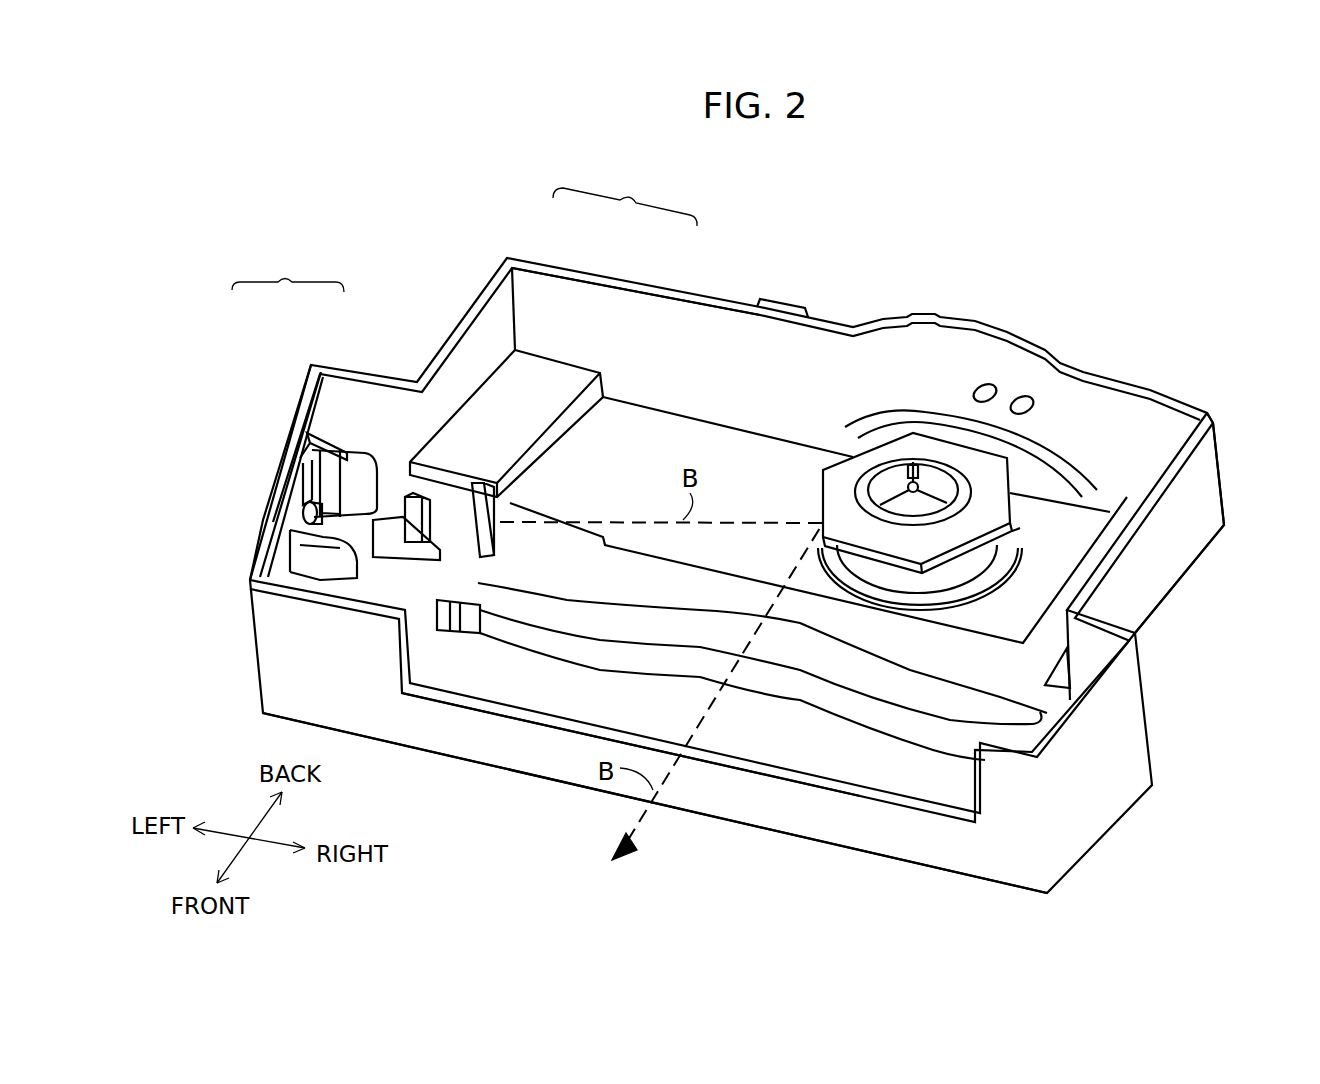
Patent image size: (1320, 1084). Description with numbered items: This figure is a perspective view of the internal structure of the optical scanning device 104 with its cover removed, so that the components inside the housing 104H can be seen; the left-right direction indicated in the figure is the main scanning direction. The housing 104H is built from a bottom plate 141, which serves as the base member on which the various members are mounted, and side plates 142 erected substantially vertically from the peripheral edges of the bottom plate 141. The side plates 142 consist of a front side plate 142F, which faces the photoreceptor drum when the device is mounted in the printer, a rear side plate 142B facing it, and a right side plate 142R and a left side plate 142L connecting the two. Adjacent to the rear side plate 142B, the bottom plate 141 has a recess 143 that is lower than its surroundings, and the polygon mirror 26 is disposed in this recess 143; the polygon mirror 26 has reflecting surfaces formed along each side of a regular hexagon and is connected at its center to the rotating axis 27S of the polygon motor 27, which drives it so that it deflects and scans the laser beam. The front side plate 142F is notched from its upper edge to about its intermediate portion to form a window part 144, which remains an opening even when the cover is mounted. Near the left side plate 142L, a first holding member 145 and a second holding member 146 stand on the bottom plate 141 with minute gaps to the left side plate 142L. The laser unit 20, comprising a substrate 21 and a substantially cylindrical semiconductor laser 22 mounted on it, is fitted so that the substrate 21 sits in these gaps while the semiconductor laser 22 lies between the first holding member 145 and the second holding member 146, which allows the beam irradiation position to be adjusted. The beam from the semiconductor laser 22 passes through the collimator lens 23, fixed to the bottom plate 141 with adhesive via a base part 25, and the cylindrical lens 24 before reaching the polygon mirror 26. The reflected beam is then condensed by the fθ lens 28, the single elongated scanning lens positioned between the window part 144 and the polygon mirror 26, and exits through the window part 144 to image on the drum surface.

The optical scanning device 104 is at (452, 262).
The housing 104H is at (625, 190).
The bottom plate 141 is at (545, 380).
The side plates 142 is at (652, 283).
The left side plate 142L is at (447, 333).
The rear side plate 142B is at (793, 345).
The right side plate 142R is at (1153, 580).
The front side plate 142F is at (873, 835).
The recess 143 is at (673, 437).
The window part 144 is at (550, 710).
The first holding member 145 is at (327, 563).
The second holding member 146 is at (363, 460).
The laser unit 20 is at (288, 265).
The substrate 21 is at (303, 500).
The semiconductor laser 22 is at (325, 505).
The collimator lens 23 is at (415, 497).
The cylindrical lens 24 is at (480, 500).
The base part 25 is at (410, 560).
The polygon mirror 26 is at (822, 490).
The polygon motor 27 is at (965, 565).
The rotating axis 27S is at (915, 478).
The fθ lens 28 is at (910, 670).